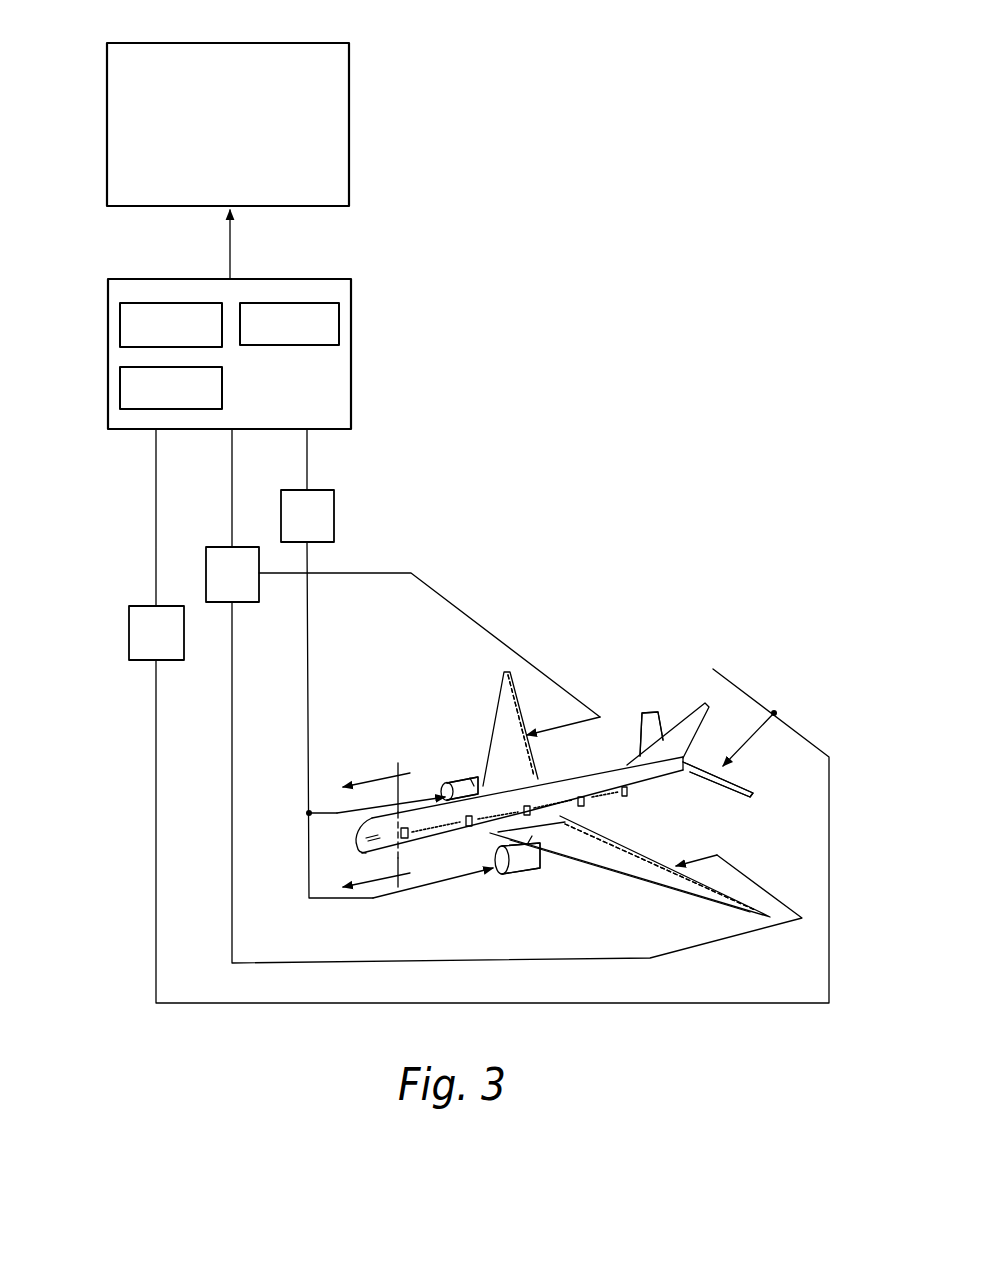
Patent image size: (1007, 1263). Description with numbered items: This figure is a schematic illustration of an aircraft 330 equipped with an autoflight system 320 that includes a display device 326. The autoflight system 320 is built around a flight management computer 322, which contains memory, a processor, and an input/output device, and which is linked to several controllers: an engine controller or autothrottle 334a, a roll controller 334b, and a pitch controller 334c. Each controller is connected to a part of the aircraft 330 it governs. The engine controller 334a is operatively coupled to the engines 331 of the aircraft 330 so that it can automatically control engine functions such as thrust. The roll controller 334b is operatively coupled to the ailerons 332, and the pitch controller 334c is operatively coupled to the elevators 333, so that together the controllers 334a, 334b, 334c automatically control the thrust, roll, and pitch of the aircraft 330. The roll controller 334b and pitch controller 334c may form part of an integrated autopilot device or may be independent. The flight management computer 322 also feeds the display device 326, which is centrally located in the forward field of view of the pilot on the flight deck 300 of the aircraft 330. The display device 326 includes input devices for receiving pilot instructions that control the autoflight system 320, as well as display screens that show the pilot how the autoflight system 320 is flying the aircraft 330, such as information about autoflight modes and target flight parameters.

The flight deck 300 is at (372, 824).
The autoflight system 320 is at (566, 113).
The flight management computer 322 is at (322, 279).
The display device 326 is at (349, 75).
The aircraft 330 is at (514, 808).
The engines 331 is at (457, 779).
The ailerons 332 is at (530, 733).
The elevators 333 is at (663, 712).
The engine controller 334a is at (334, 510).
The roll controller 334b is at (213, 547).
The pitch controller 334c is at (135, 606).